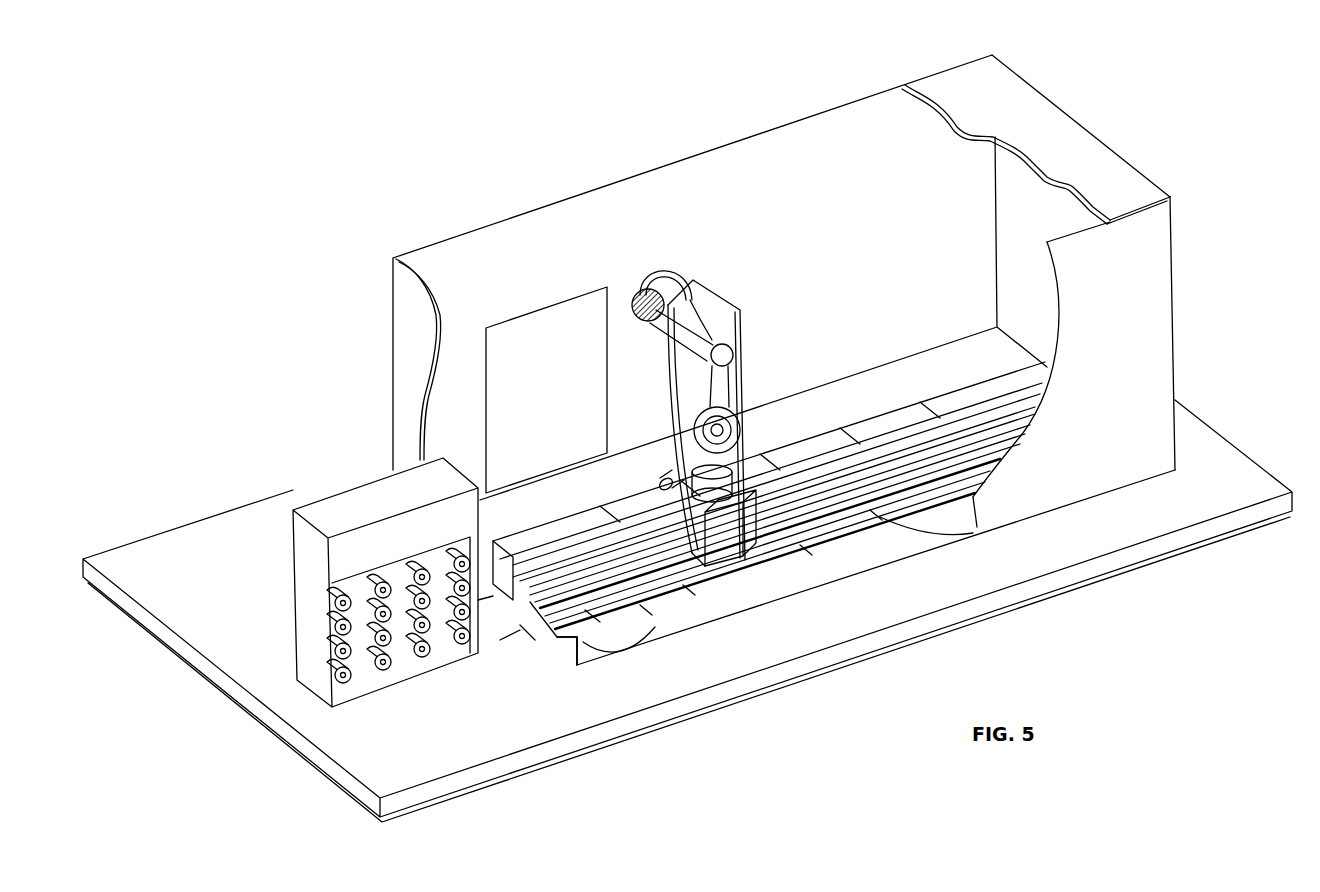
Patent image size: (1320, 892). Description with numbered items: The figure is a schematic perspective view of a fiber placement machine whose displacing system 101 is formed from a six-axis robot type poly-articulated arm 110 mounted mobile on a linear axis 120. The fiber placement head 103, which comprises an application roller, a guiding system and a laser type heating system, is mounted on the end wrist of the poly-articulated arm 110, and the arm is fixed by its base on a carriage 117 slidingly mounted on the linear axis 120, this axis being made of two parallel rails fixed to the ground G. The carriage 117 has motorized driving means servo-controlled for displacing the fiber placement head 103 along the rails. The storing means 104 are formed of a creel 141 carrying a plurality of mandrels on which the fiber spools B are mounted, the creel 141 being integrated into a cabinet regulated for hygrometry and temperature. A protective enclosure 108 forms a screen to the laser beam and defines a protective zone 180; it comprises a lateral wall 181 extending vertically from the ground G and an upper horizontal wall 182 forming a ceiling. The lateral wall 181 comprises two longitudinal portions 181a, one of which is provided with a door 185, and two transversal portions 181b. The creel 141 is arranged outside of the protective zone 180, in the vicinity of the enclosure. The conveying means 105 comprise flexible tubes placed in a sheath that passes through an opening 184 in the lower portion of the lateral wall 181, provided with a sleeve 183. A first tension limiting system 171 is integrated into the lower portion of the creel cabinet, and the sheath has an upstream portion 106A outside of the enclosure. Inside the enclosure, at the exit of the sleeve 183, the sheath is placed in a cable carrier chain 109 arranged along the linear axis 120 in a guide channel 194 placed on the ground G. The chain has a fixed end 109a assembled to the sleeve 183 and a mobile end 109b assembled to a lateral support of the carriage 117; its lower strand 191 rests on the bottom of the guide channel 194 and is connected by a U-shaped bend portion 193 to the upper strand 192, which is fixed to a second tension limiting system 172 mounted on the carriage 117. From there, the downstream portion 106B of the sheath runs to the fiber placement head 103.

The protective zone 180 is at (779, 355).
The upper horizontal wall 182 is at (1043, 112).
The lateral wall 181 is at (779, 431).
The longitudinal portions 181a is at (1170, 340).
The transversal portions 181b is at (400, 318).
The protective enclosure 108 is at (390, 265).
The door 185 is at (535, 312).
The storing means 104 is at (354, 595).
The creel 141 is at (300, 632).
The fiber spools B is at (383, 672).
The displacing system 101 is at (743, 515).
The linear axis 120 is at (898, 395).
The poly-articulated arm 110 is at (691, 385).
The fiber placement head 103 is at (638, 285).
The conveying means 105 is at (668, 258).
The upstream portion of the sheath 106A is at (512, 650).
The downstream portion of the sheath 106B is at (686, 300).
The carriage 117 is at (660, 478).
The second tension limiting system 172 is at (748, 565).
The cable carrier chain 109 is at (850, 545).
The fixed end 109a is at (585, 610).
The mobile end 109b is at (805, 550).
The lower strand 191 is at (688, 590).
The upper strand 192 is at (875, 515).
The bend portion 193 is at (977, 495).
The guide channel 194 is at (643, 610).
The sleeve 183 is at (528, 638).
The opening 184 is at (538, 633).
The first tension limiting system 171 is at (490, 645).
The ground G is at (1225, 440).